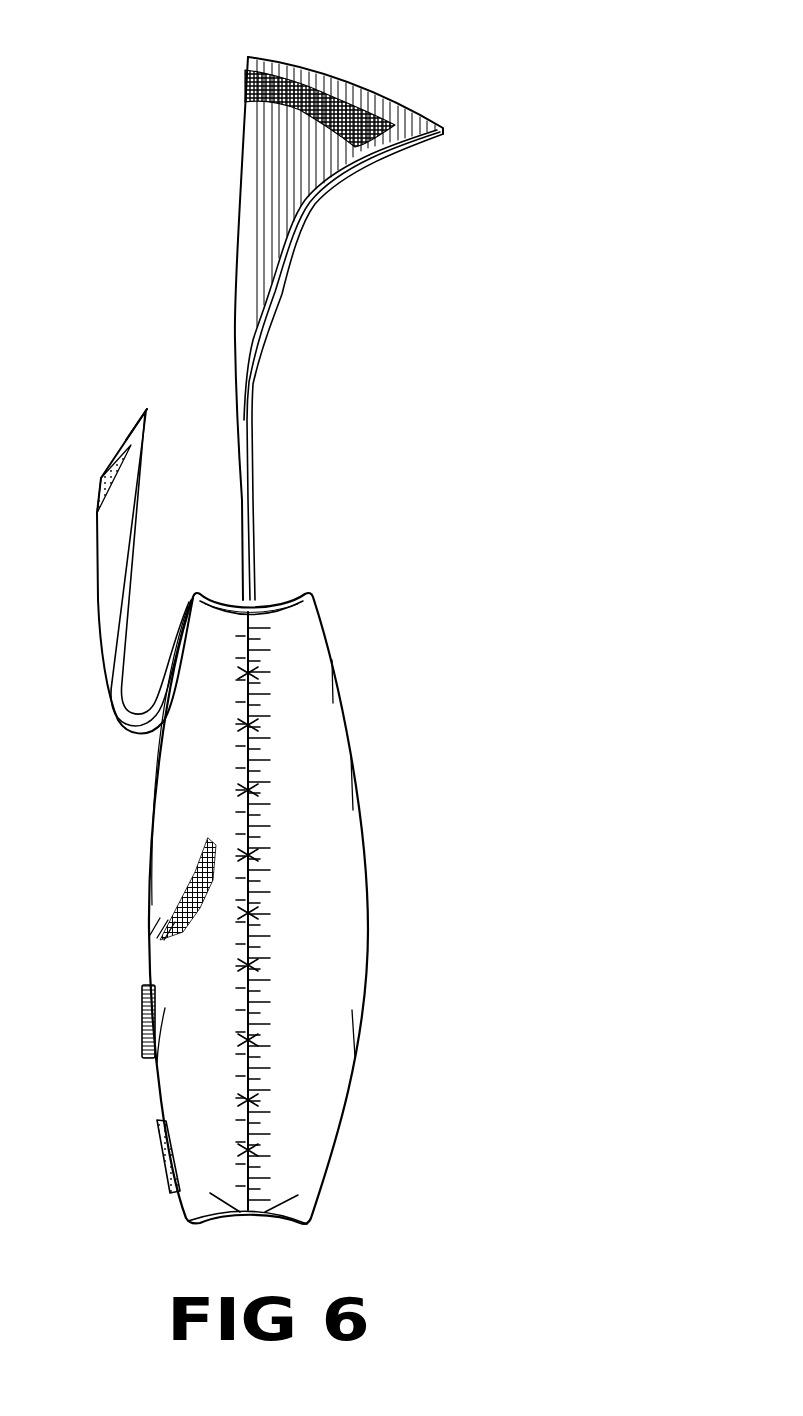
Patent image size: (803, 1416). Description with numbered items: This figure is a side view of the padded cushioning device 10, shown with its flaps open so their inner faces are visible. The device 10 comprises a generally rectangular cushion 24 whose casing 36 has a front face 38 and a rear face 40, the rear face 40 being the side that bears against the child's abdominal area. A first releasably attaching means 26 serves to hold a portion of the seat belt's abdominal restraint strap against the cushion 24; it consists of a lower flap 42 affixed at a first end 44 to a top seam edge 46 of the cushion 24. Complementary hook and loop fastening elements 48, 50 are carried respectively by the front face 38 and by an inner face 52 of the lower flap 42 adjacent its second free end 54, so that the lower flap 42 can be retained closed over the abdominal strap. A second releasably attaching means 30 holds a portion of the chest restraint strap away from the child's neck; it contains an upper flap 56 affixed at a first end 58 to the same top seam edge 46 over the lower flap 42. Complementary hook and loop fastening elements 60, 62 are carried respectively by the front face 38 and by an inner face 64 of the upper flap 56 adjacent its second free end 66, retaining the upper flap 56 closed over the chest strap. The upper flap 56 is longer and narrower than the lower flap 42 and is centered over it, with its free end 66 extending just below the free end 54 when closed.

The padded cushioning device 10 is at (392, 633).
The cushion 24 is at (370, 797).
The first releasably attaching means 26 is at (90, 600).
The second releasably attaching means 30 is at (268, 382).
The casing 36 is at (333, 937).
The front face 38 is at (183, 856).
The rear face 40 is at (312, 1000).
The lower flap 42 is at (100, 655).
The first end 44 is at (237, 612).
The top seam edge 46 is at (265, 598).
The hook and loop fastening element 48 is at (140, 1010).
The hook and loop fastening element 50 is at (97, 490).
The inner face 52 is at (110, 545).
The second free end 54 is at (126, 440).
The upper flap 56 is at (228, 348).
The first end 58 is at (240, 603).
The hook and loop fastening element 60 is at (160, 1140).
The hook and loop fastening element 62 is at (243, 84).
The inner face 64 is at (256, 232).
The second free end 66 is at (373, 78).